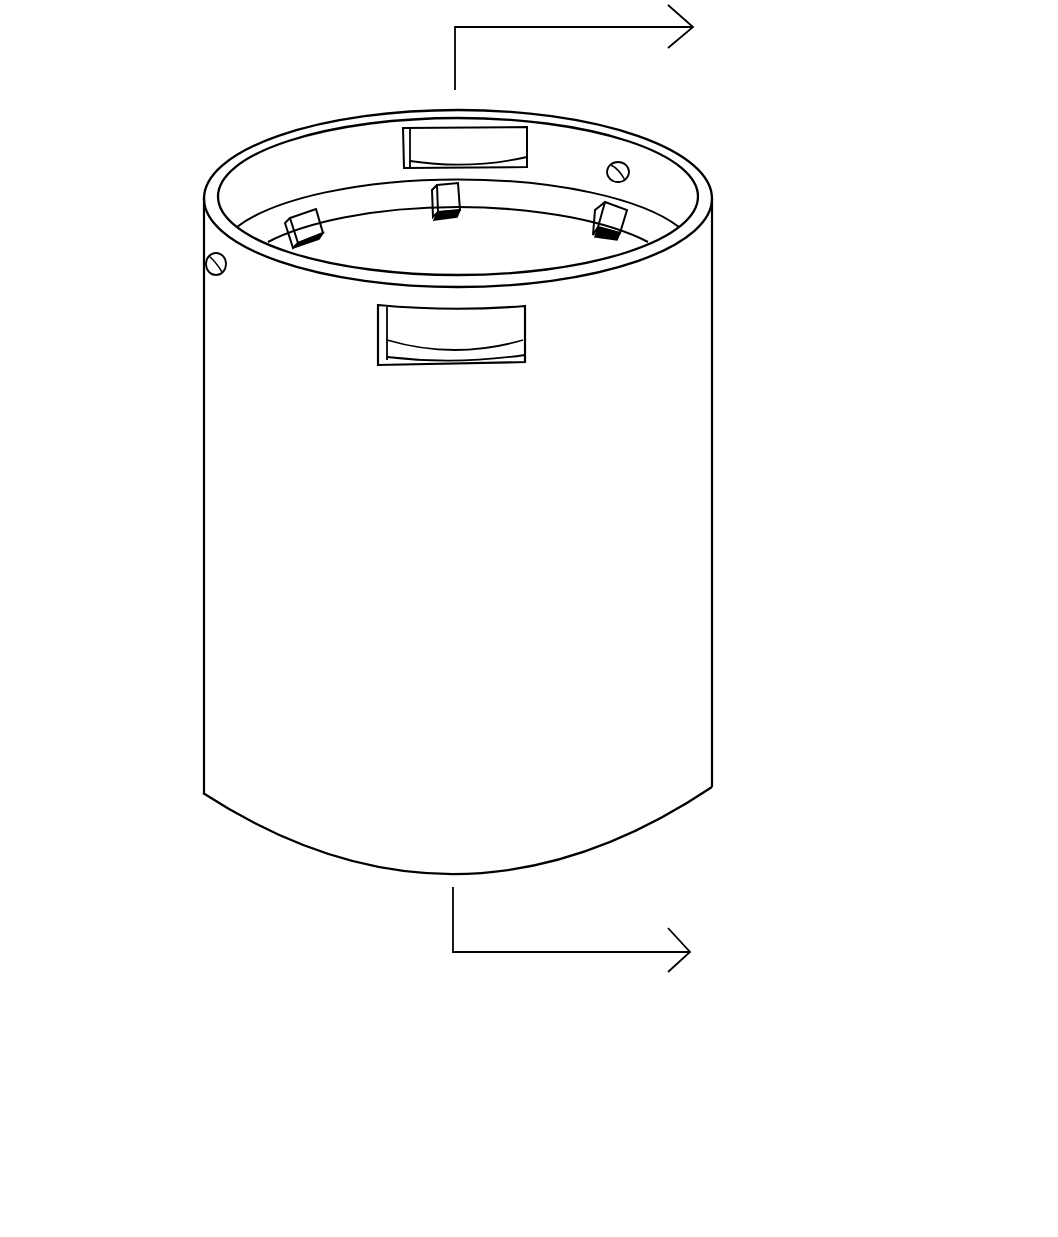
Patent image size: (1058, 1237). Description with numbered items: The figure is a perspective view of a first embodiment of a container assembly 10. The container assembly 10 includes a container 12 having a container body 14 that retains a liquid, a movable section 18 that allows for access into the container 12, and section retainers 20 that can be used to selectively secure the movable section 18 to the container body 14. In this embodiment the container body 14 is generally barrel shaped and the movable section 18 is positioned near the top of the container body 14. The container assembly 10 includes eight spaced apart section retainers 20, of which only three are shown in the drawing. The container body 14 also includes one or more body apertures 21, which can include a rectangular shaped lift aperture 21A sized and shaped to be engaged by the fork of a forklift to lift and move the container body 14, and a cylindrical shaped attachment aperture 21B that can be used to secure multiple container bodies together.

The container assembly 10 is at (742, 173).
The container 12 is at (650, 520).
The container body 14 is at (678, 412).
The movable section 18 is at (495, 227).
The section retainers 20 is at (300, 222).
The body apertures 21 is at (378, 362).
The lift apertures 21A is at (450, 368).
The attachment apertures 21B is at (205, 258).